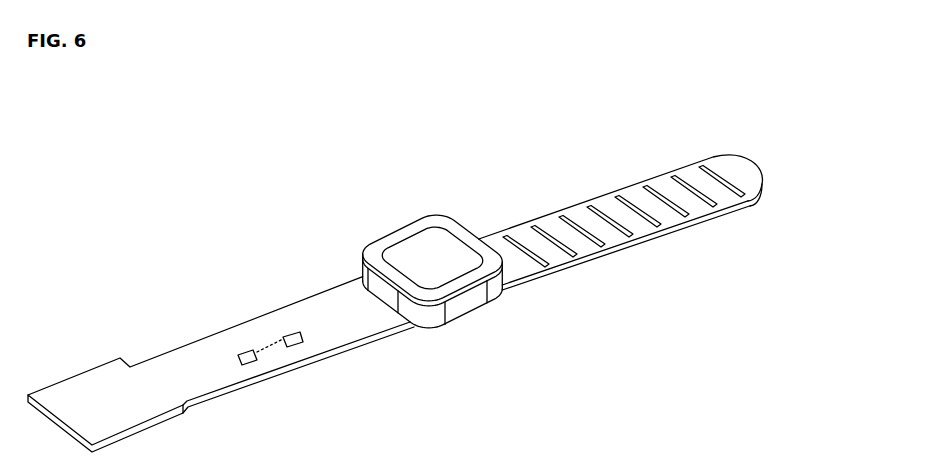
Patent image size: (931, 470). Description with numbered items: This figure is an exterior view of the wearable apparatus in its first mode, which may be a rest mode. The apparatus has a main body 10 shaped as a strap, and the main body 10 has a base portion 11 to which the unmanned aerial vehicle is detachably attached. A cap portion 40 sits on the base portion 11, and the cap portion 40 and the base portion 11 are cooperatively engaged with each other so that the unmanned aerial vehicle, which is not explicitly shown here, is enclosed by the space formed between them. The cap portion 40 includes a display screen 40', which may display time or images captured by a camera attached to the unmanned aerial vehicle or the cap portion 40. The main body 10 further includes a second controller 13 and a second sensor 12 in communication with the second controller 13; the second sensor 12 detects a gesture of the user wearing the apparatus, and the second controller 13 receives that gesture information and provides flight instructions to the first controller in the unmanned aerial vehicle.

The main body 10 is at (628, 222).
The base portion 11 is at (460, 305).
The second sensor 12 is at (252, 362).
The second controller 13 is at (297, 342).
The cap portion 40 is at (433, 215).
The display screen 40' is at (432, 258).